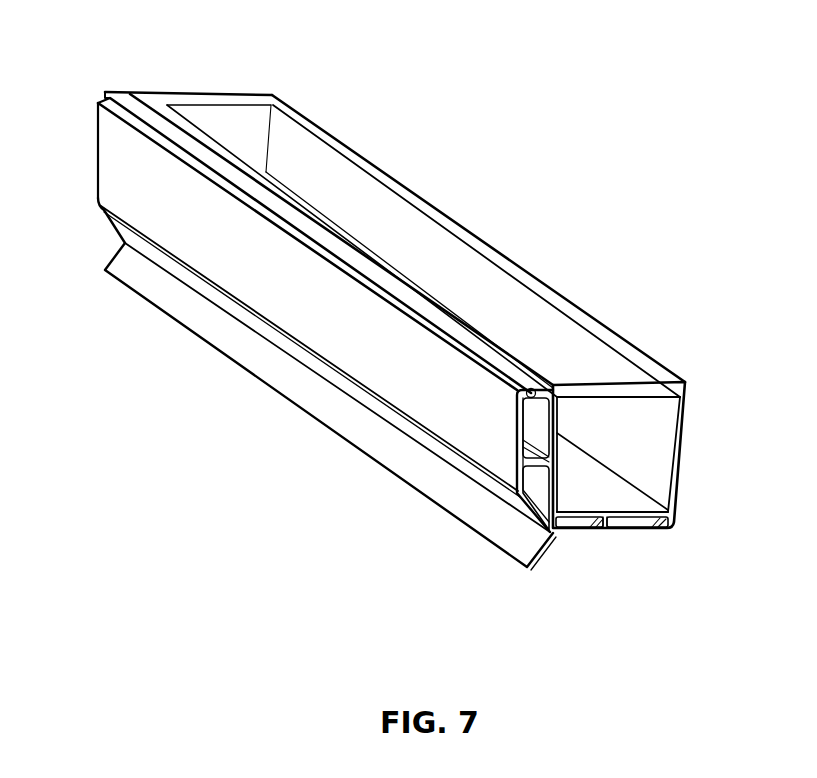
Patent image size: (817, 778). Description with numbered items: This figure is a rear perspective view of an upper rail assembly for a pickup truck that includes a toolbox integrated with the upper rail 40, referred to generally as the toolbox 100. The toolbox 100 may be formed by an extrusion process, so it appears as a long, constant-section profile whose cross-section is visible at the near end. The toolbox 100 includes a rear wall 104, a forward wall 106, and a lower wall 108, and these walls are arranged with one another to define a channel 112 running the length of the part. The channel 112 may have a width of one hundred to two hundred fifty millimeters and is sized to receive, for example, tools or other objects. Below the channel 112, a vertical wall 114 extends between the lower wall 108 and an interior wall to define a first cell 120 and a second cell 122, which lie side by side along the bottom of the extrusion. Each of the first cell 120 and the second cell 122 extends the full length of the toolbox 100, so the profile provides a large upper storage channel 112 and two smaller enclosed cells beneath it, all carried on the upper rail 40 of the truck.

The upper rail 40 is at (113, 82).
The toolbox 100 is at (680, 370).
The rear wall 104 is at (557, 417).
The forward wall 106 is at (688, 425).
The channel 112 is at (648, 442).
The lower wall 108 is at (588, 530).
The first cell 120 is at (574, 520).
The vertical wall 114 is at (628, 526).
The second cell 122 is at (656, 522).